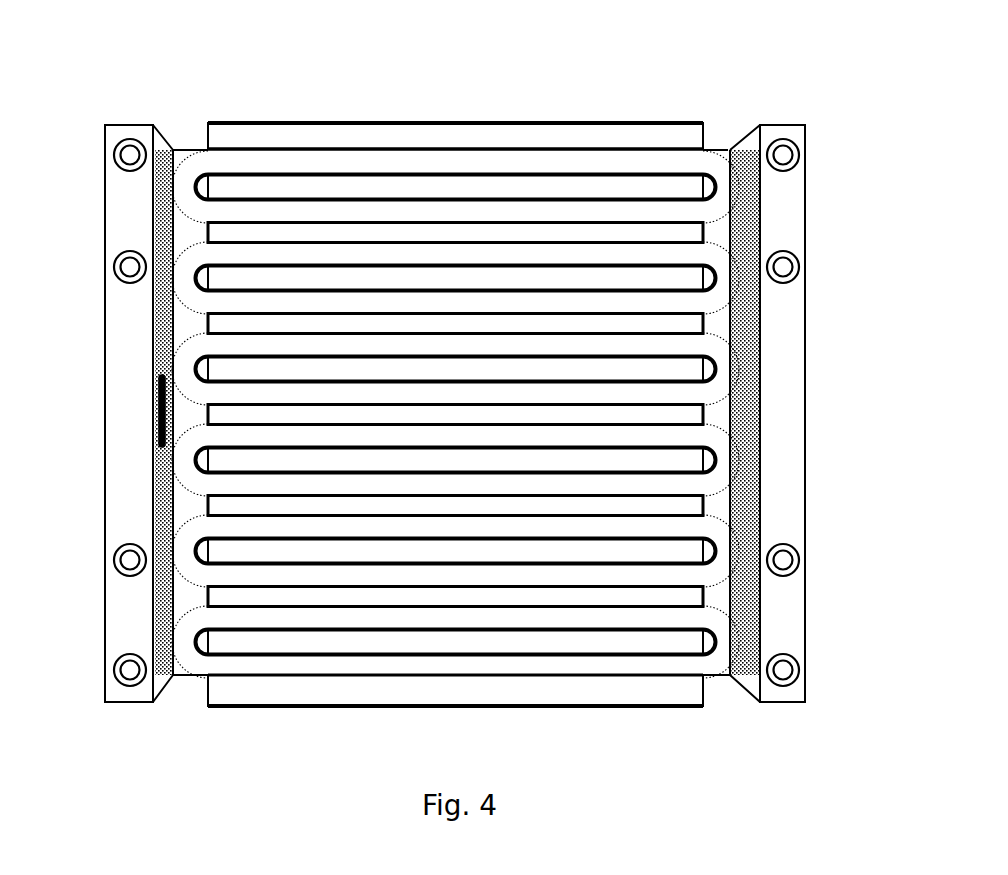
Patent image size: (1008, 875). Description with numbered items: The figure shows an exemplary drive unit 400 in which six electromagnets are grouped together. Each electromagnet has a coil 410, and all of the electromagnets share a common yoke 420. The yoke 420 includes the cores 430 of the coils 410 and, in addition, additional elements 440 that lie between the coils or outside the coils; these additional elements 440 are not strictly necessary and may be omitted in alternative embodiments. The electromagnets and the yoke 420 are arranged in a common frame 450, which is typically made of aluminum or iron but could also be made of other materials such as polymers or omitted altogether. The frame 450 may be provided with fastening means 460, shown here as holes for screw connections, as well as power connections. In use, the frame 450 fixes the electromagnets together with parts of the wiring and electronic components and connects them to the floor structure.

The drive unit 400 is at (732, 88).
The coils 410 is at (717, 262).
The common yoke 420 is at (368, 135).
The cores 430 is at (670, 278).
The additional elements 440 is at (670, 503).
The frame 450 is at (132, 490).
The fastening means 460 is at (113, 158).